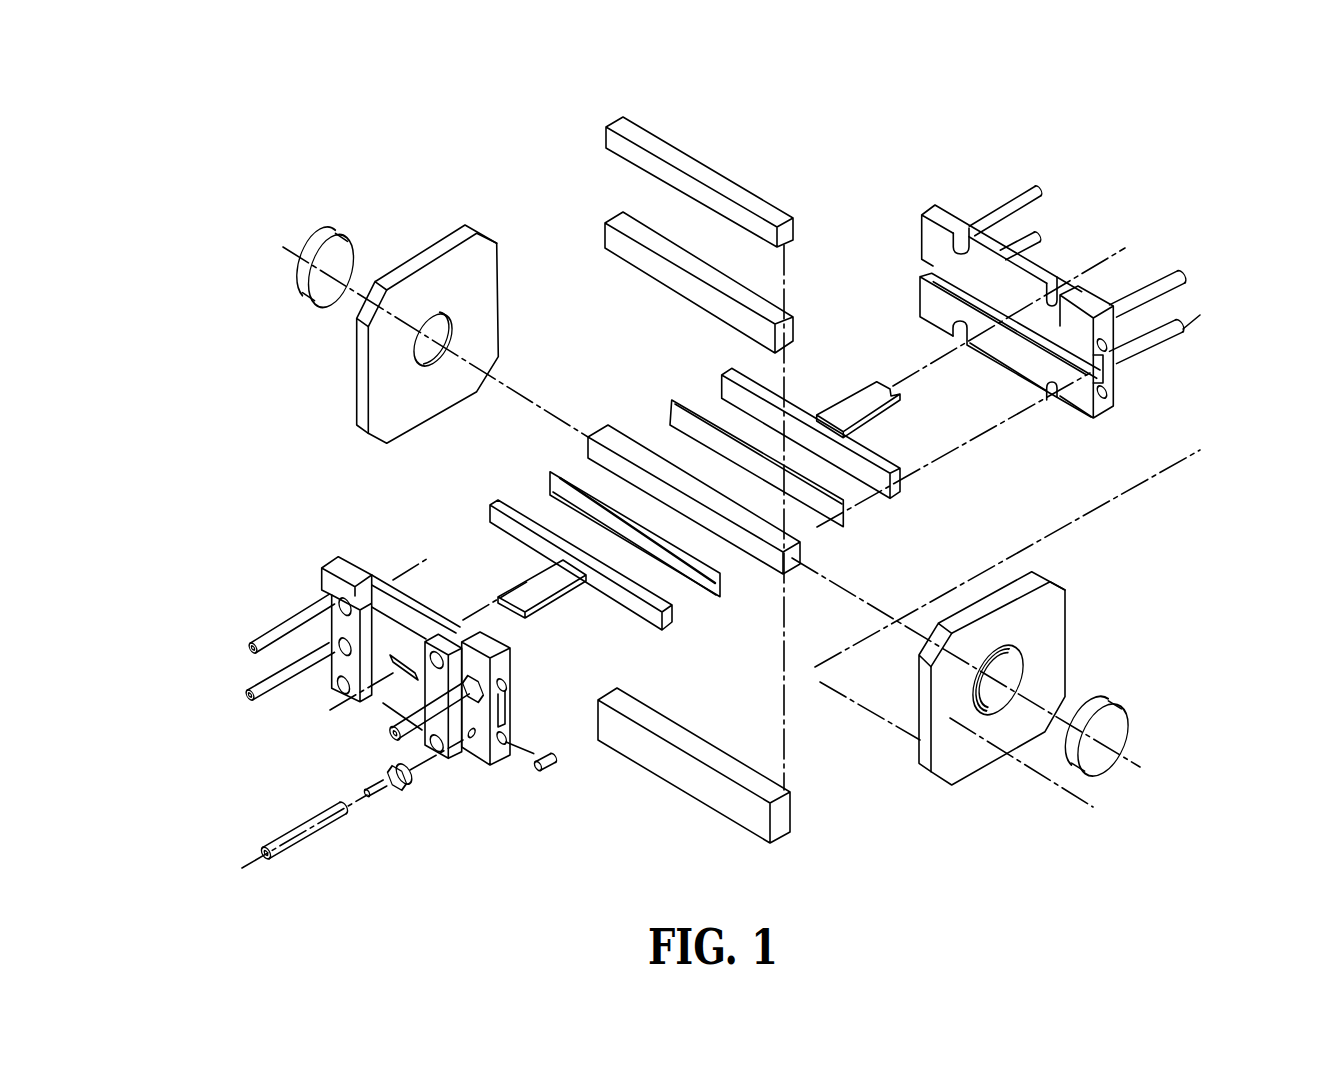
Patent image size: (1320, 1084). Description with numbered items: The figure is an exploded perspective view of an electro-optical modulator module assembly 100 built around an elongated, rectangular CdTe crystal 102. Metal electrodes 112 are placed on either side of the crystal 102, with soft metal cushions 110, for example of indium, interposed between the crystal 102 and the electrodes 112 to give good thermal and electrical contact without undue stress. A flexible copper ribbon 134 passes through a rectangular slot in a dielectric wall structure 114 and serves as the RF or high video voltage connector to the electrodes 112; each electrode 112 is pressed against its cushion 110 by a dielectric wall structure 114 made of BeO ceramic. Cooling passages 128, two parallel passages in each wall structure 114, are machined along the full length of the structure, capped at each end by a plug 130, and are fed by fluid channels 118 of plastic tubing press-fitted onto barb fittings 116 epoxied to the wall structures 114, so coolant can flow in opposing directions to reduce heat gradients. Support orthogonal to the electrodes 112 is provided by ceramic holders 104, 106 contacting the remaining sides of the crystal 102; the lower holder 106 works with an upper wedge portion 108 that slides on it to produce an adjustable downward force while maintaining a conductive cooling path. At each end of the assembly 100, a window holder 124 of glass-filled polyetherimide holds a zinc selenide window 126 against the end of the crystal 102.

The EO modulator module assembly 100 is at (266, 108).
The CdTe crystal 102 is at (595, 419).
The ceramic holder 104 is at (693, 792).
The lower holder 106 is at (640, 270).
The upper wedge portion 108 is at (657, 138).
The soft metal cushions 110 is at (668, 406).
The metal electrodes 112 is at (722, 376).
The dielectric wall structure 114 is at (931, 210).
The barb fittings 116 is at (403, 790).
The fluid channels 118 is at (1182, 272).
The window holders 124 is at (443, 235).
The window 126 is at (327, 230).
The cooling passages 128 is at (1106, 391).
The plug 130 is at (548, 773).
The flexible copper ribbon 134 is at (527, 588).